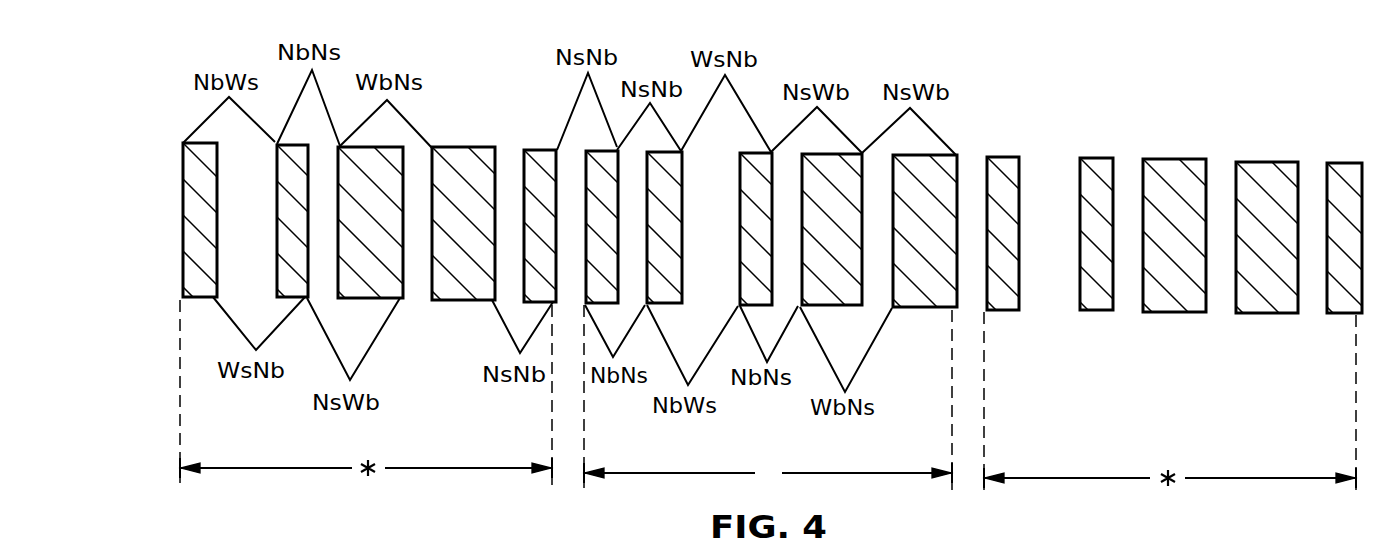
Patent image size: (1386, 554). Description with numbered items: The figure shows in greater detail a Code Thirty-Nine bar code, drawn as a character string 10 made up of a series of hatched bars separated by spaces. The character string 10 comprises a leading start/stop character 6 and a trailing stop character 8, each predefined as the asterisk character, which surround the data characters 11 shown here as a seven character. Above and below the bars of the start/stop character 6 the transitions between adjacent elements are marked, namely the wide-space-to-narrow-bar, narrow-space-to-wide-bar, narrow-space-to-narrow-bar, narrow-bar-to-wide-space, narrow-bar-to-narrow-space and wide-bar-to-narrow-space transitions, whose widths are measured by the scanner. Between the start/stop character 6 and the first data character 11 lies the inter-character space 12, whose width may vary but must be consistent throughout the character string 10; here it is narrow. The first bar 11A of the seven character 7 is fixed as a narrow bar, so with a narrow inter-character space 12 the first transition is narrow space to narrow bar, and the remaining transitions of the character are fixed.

The start/stop character 6 is at (330, 468).
The data character 7 is at (768, 400).
The stop character 8 is at (1225, 478).
The character string 10 is at (975, 103).
The data characters 11 is at (742, 98).
The first bar 11A is at (649, 127).
The inter-character space 12 is at (572, 110).